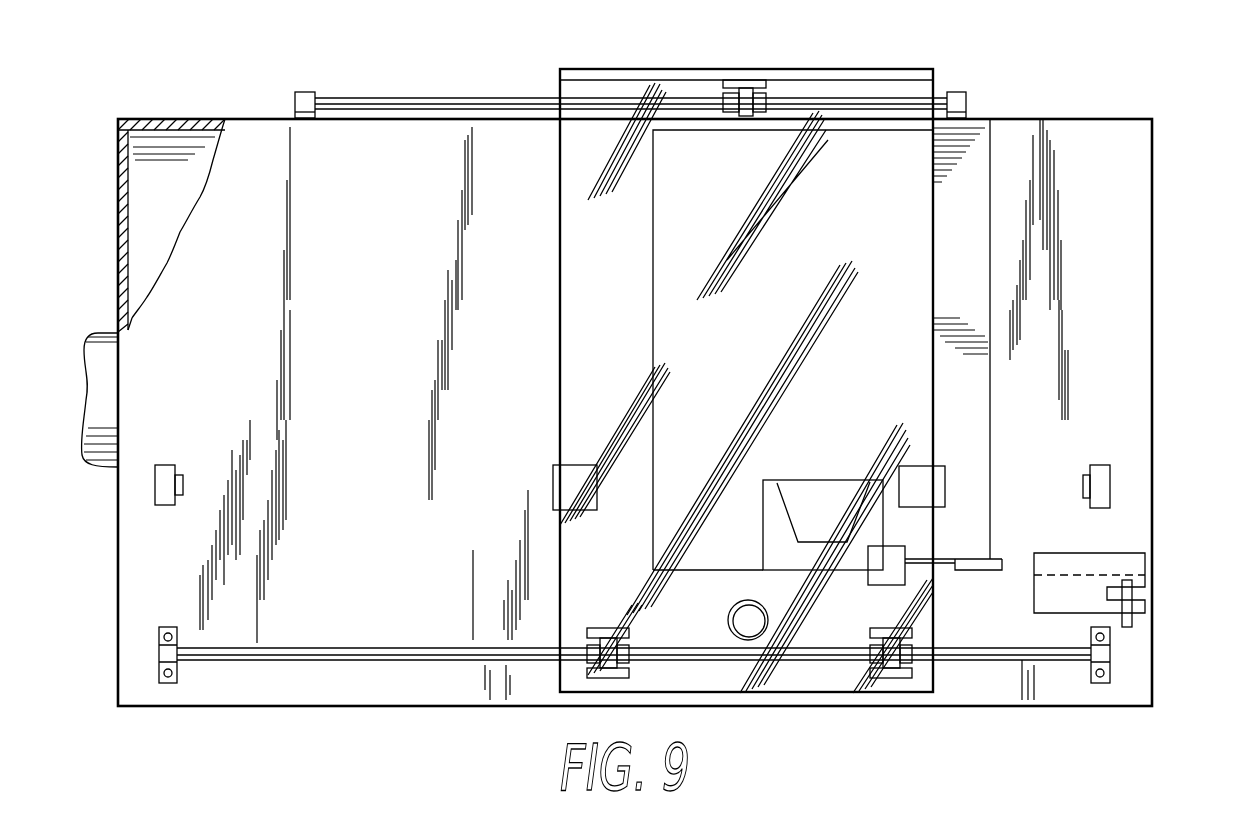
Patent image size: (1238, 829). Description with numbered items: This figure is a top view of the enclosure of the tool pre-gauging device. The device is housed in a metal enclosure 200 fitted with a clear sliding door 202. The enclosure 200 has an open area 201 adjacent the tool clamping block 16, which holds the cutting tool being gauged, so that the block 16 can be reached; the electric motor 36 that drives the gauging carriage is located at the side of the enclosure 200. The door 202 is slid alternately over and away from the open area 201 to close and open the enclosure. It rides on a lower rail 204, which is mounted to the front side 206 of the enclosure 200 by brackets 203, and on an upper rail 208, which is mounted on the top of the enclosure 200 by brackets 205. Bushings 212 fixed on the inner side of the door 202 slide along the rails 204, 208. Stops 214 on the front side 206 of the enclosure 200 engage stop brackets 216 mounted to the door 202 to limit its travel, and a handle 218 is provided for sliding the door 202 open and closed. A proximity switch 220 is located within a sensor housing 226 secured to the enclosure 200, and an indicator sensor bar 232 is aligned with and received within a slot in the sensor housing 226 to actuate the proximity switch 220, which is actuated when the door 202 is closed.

The tool clamping block 16 is at (767, 513).
The electric motor 36 is at (102, 466).
The metal enclosure 200 is at (130, 553).
The open area 201 is at (990, 146).
The sliding door 202 is at (573, 355).
The brackets 203 is at (159, 630).
The rail 204 is at (243, 660).
The brackets 205 is at (318, 70).
The front side 206 is at (412, 517).
The rail 208 is at (382, 97).
The bushings 212 is at (745, 100).
The stops 214 is at (166, 465).
The stop brackets 216 is at (553, 478).
The handle 218 is at (729, 616).
The proximity switch 220 is at (1132, 627).
The sensor housing 226 is at (1130, 553).
The indicator sensor bar 232 is at (945, 572).